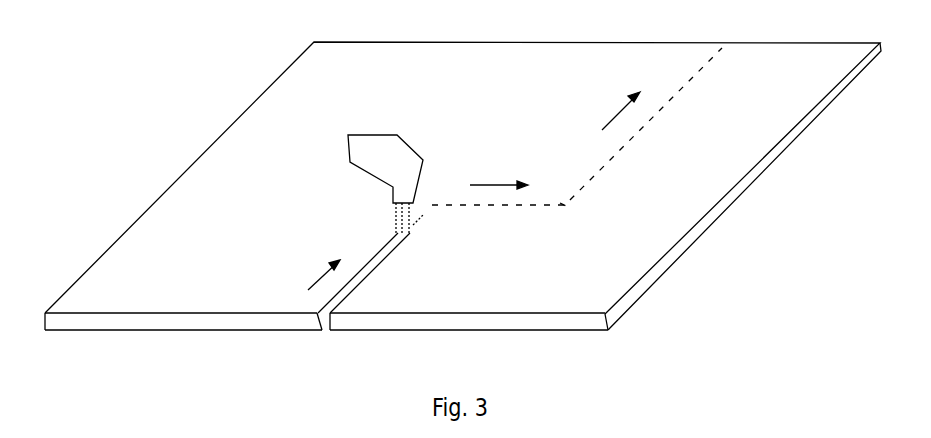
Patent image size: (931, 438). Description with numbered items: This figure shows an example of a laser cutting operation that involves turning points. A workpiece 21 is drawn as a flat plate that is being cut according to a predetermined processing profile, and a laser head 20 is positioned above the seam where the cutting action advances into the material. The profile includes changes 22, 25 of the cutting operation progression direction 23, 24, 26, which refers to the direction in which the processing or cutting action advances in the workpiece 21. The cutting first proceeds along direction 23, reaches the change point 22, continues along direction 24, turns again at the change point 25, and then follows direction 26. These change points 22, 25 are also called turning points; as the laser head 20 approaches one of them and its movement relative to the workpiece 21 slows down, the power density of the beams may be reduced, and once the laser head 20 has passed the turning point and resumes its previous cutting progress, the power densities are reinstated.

The laser head 20 is at (367, 142).
The workpiece 21 is at (240, 133).
The change point of processing direction 22 is at (437, 208).
The cutting operation direction 23 is at (313, 278).
The cutting operation direction 24 is at (500, 183).
The change point of processing direction 25 is at (567, 208).
The cutting operation direction 26 is at (613, 113).